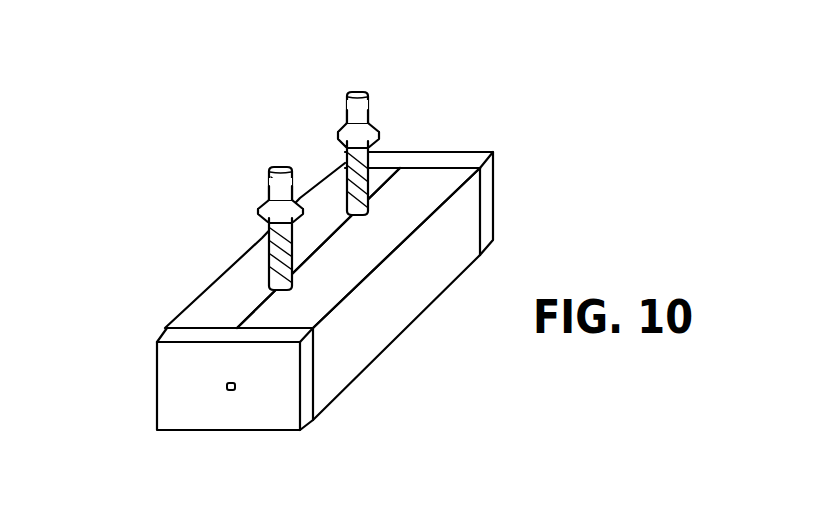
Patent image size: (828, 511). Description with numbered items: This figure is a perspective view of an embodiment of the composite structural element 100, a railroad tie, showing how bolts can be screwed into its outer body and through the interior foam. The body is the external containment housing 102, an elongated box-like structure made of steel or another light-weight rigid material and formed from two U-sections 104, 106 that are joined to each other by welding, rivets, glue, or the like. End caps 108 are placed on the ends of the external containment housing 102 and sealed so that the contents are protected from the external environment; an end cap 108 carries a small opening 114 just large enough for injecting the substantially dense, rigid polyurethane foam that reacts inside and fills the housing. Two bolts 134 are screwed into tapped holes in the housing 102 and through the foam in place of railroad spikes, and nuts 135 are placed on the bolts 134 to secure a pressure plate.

The composite structural element 100 is at (653, 144).
The external containment housing 102 is at (420, 265).
The formed U-section 104 is at (223, 287).
The formed U-section 106 is at (313, 300).
The end cap 108 is at (175, 407).
The small opening 114 is at (223, 382).
The bolt 134 is at (267, 163).
The nut 135 is at (337, 140).